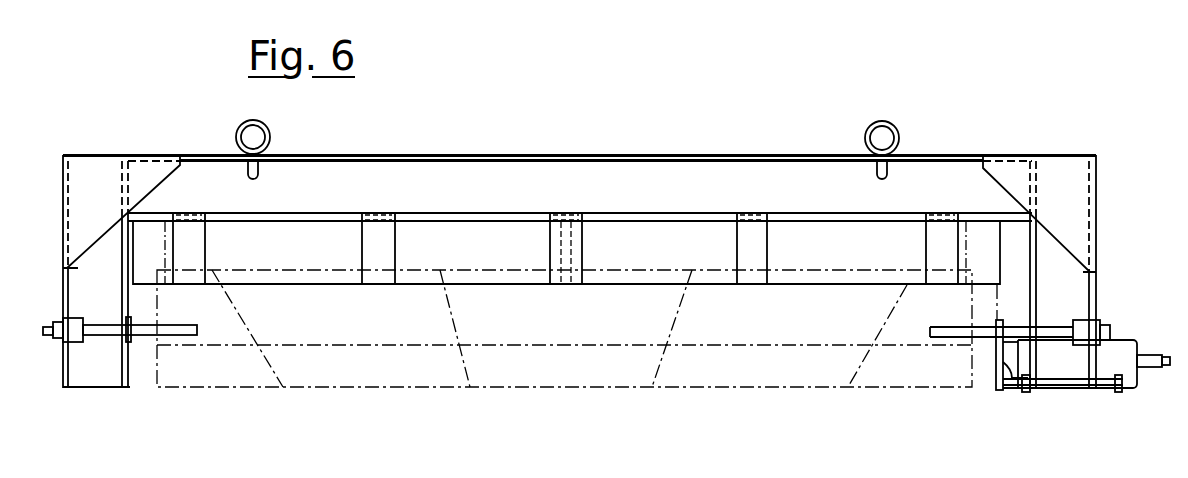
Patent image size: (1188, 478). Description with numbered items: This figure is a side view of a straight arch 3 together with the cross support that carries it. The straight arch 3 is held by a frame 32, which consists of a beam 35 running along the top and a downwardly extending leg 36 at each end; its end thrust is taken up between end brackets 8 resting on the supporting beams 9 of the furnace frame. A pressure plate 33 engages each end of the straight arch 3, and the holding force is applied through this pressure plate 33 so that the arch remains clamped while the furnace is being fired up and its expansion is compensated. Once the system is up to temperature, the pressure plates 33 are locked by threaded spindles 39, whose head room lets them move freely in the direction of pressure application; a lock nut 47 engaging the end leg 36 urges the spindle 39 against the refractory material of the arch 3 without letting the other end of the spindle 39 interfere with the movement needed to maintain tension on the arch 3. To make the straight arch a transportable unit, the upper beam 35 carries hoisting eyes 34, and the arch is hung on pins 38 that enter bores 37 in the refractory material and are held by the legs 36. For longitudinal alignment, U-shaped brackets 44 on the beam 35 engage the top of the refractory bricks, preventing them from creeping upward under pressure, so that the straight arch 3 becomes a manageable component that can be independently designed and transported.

The straight arch 3 is at (820, 345).
The end bracket 8 is at (1012, 356).
The supporting beam 9 is at (57, 311).
The frame 32 is at (999, 151).
The pressure plate 33 is at (1013, 390).
The hoisting eye 34 is at (896, 132).
The beam 35 is at (518, 178).
The leg 36 is at (104, 238).
The bore 37 is at (930, 342).
The pin 38 is at (963, 350).
The threaded spindle 39 is at (1080, 383).
The U-shaped bracket 44 is at (753, 260).
The lock nut 47 is at (1025, 392).